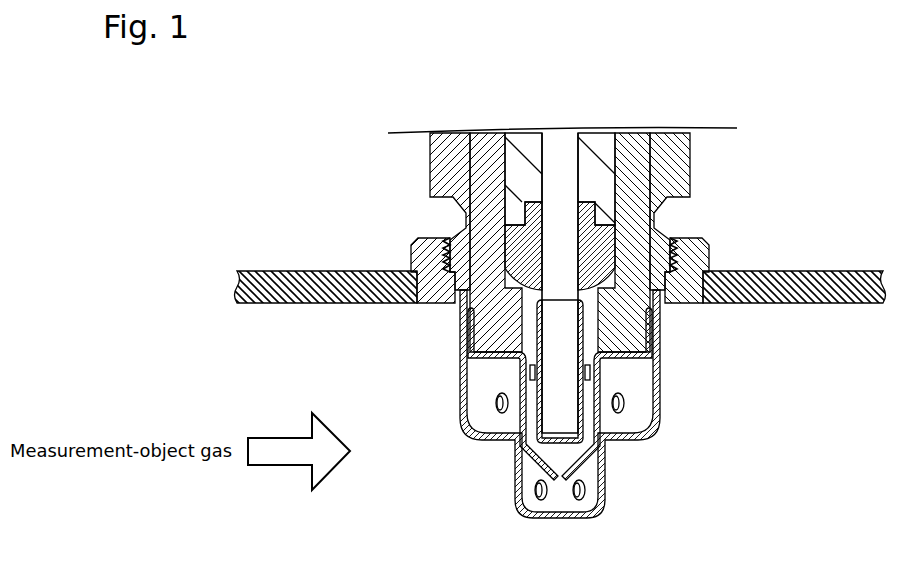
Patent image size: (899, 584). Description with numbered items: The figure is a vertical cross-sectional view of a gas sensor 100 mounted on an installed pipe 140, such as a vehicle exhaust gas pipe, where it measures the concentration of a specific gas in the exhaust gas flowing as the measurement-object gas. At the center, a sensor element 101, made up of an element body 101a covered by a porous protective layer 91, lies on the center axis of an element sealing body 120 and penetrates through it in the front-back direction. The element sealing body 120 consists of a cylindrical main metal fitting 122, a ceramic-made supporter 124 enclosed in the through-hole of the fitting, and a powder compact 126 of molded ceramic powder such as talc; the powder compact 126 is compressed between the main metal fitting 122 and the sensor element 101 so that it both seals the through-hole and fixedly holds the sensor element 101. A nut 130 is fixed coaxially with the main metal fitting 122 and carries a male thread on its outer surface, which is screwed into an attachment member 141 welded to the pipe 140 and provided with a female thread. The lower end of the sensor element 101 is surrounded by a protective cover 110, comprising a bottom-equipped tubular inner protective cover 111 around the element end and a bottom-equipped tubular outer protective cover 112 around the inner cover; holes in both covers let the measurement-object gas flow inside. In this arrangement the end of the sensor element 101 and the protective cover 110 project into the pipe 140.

The gas sensor 100 is at (800, 101).
The sensor element 101 is at (392, 345).
The element body 101a is at (556, 322).
The porous protective layer 91 is at (535, 392).
The protective cover 110 is at (765, 345).
The inner protective cover 111 is at (600, 388).
The outer protective cover 112 is at (660, 398).
The element sealing body 120 is at (770, 158).
The main metal fitting 122 is at (630, 159).
The supporter 124 is at (600, 247).
The powder compact 126 is at (603, 198).
The nut 130 is at (445, 175).
The pipe 140 is at (316, 285).
The attachment member 141 is at (418, 240).